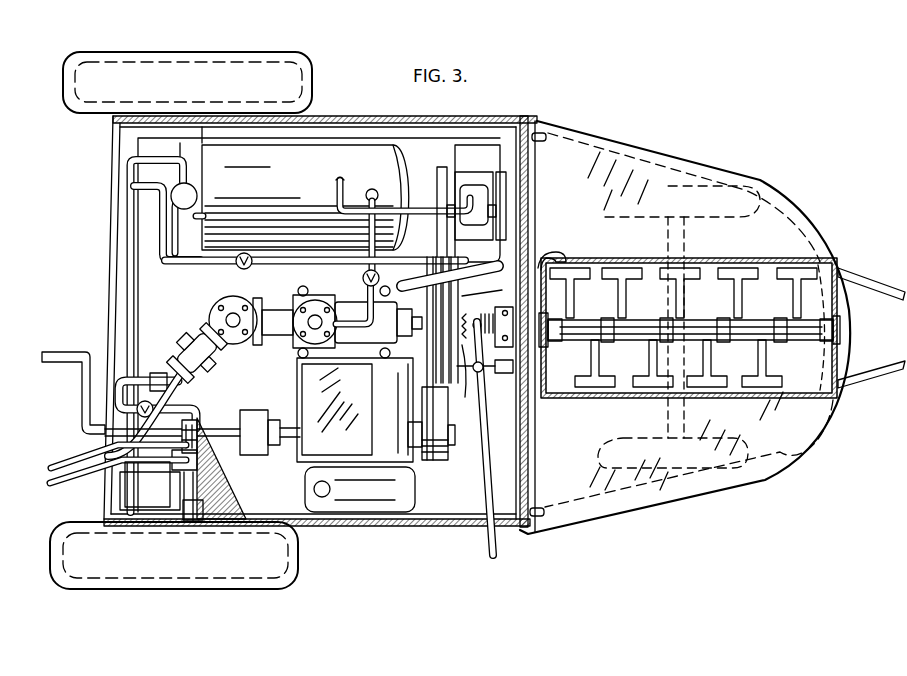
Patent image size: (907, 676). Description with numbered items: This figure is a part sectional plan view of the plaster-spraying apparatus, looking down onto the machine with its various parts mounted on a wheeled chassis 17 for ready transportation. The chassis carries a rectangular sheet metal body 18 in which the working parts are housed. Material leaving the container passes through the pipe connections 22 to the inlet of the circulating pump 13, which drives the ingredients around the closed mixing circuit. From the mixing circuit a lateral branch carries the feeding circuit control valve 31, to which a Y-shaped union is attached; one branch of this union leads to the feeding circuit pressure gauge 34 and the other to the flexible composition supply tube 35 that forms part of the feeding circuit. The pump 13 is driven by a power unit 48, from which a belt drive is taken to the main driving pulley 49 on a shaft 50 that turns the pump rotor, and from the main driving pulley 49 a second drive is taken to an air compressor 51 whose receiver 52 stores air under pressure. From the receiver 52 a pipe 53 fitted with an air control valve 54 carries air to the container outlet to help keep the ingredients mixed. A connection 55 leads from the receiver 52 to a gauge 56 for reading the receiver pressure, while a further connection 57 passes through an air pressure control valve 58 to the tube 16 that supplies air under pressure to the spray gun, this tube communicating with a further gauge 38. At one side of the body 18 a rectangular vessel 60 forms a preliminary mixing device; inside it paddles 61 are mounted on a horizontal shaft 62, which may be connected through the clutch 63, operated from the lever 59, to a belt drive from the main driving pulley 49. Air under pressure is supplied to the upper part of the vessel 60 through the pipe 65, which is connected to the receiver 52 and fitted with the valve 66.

The circulating pump 13 is at (312, 283).
The tube connection for air under pressure 16 is at (56, 476).
The wheeled chassis 17 is at (587, 516).
The rectangular sheet metal body 18 is at (488, 118).
The pipe connections 22 is at (312, 328).
The feeding circuit control valve 31 is at (218, 353).
The feeding circuit pressure gauge 34 is at (182, 480).
The flexible composition supply tube 35 is at (80, 440).
The gauge 38 is at (198, 420).
The power unit 48 is at (356, 435).
The main driving pulley 49 is at (458, 282).
The shaft 50 is at (419, 331).
The air compressor 51 is at (475, 190).
The receiver 52 is at (305, 197).
The pipe 53 is at (365, 192).
The air control valve 54 is at (363, 284).
The connection 55 is at (116, 487).
The gauge 56 is at (193, 522).
The connection 57 is at (128, 332).
The air pressure control valve 58 is at (148, 378).
The lever 59 is at (483, 480).
The rectangular vessel 60 is at (758, 260).
The paddles 61 is at (668, 298).
The horizontal shaft 62 is at (813, 338).
The clutch 63 is at (465, 378).
The pipe 65 is at (548, 250).
The valve 66 is at (244, 270).